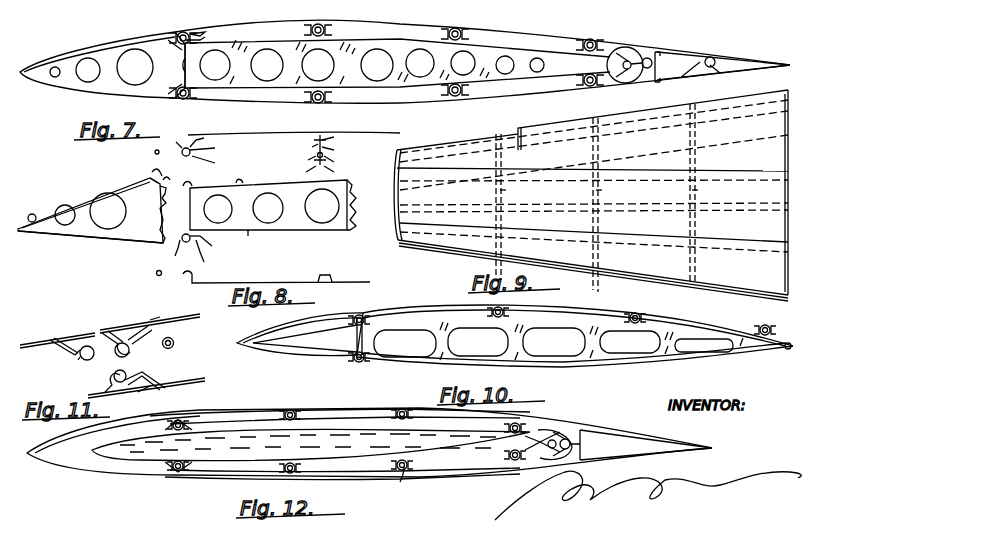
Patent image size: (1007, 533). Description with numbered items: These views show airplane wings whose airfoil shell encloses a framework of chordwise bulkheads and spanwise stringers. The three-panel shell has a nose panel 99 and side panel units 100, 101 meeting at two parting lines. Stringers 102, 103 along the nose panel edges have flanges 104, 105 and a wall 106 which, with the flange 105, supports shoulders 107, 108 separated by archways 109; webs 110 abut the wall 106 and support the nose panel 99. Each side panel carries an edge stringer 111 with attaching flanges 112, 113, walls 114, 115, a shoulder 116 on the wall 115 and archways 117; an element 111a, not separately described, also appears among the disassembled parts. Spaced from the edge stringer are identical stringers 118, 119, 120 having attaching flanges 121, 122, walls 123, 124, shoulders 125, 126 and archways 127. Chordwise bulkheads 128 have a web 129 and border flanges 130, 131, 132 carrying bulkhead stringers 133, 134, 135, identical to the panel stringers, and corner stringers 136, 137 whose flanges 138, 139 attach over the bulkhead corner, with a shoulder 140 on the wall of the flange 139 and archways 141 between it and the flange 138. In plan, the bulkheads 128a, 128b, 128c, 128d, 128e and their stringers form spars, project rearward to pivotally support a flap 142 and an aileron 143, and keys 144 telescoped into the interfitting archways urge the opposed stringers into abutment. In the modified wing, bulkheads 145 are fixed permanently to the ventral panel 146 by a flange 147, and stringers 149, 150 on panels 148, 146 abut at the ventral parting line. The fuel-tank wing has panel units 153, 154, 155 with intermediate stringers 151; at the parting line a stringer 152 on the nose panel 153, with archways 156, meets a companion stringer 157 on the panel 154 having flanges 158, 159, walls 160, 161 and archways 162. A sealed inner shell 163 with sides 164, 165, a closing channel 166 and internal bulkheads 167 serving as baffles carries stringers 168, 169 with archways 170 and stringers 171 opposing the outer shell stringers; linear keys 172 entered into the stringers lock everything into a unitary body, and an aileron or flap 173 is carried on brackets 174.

In FIG. 7, the nose panel 99 is at (108, 46).
In FIG. 9, the nose panel 99 is at (444, 246).
In FIG. 7, the side panel unit 100 is at (522, 32).
In FIG. 9, the side panel unit 100 is at (570, 146).
In FIG. 7, the side panel unit 101 is at (486, 98).
In FIG. 7, the stringer 102 is at (183, 33).
In FIG. 9, the stringer 102 is at (636, 240).
In FIG. 7, the stringer 103 is at (176, 98).
In FIG. 8, the stringer 103 is at (160, 245).
In FIG. 8, the flange 104 is at (140, 174).
In FIG. 8, the flange 105 is at (156, 170).
In FIG. 8, the wall 106 is at (164, 225).
In FIG. 8, the shoulder 107 is at (164, 176).
In FIG. 8, the shoulder 108 is at (175, 205).
In FIG. 8, the archways 109 is at (175, 192).
In FIG. 8, the web 110 is at (92, 210).
In FIG. 7, the edge stringer 111 is at (201, 31).
In FIG. 8, the edge stringer 111 is at (294, 146).
In FIG. 9, the edge stringer 111 is at (645, 229).
In FIG. 8, the lower skin panel 111a is at (258, 284).
In FIG. 8, the attaching flange 112 is at (202, 137).
In FIG. 8, the attaching flange 113 is at (212, 140).
In FIG. 8, the wall 114 is at (184, 146).
In FIG. 8, the wall 115 is at (210, 149).
In FIG. 8, the shoulder 116 is at (210, 160).
In FIG. 8, the archways 117 is at (172, 148).
In FIG. 7, the stringer 118 is at (330, 31).
In FIG. 8, the stringer 118 is at (318, 137).
In FIG. 9, the stringer 118 is at (546, 215).
In FIG. 7, the stringer 119 is at (468, 34).
In FIG. 9, the stringer 119 is at (585, 179).
In FIG. 7, the stringer 120 is at (583, 45).
In FIG. 9, the stringer 120 is at (672, 156).
In FIG. 8, the attaching flange 121 is at (312, 146).
In FIG. 8, the attaching flange 122 is at (334, 148).
In FIG. 8, the wall 123 is at (310, 159).
In FIG. 8, the wall 124 is at (326, 136).
In FIG. 8, the shoulder 125 is at (310, 172).
In FIG. 8, the shoulder 126 is at (334, 160).
In FIG. 8, the archways 127 is at (334, 172).
In FIG. 7, the bulkhead 128 is at (378, 27).
In FIG. 8, the bulkhead 128 is at (348, 231).
In FIG. 9, the bulkhead 128a is at (784, 158).
In FIG. 9, the bulkhead 128b is at (696, 198).
In FIG. 9, the bulkhead 128c is at (602, 199).
In FIG. 9, the bulkhead 128d is at (523, 198).
In FIG. 9, the bulkhead 128e is at (408, 200).
In FIG. 8, the web 129 is at (252, 208).
In FIG. 8, the flange 130 is at (242, 178).
In FIG. 8, the flange 131 is at (206, 210).
In FIG. 8, the flange 132 is at (264, 232).
In FIG. 7, the bulkhead stringer 133 is at (304, 33).
In FIG. 8, the bulkhead stringer 133 is at (356, 182).
In FIG. 7, the bulkhead stringer 134 is at (440, 33).
In FIG. 7, the bulkhead stringer 135 is at (608, 46).
In FIG. 7, the bulkhead stringer 136 is at (198, 38).
In FIG. 8, the bulkhead stringer 136 is at (203, 183).
In FIG. 8, the bulkhead stringer 137 is at (205, 250).
In FIG. 8, the flange 138 is at (163, 255).
In FIG. 8, the flange 139 is at (200, 238).
In FIG. 8, the shoulder 140 is at (210, 264).
In FIG. 8, the archways 141 is at (187, 255).
In FIG. 7, the flap 142 is at (675, 52).
In FIG. 9, the flap 142 is at (656, 109).
In FIG. 9, the aileron 143 is at (468, 143).
In FIG. 8, the keys 144 is at (155, 274).
In FIG. 10, the bulkheads 145 is at (455, 343).
In FIG. 10, the ventral panel 146 is at (620, 360).
In FIG. 10, the flange 147 is at (565, 345).
In FIG. 10, the panel 148 is at (283, 358).
In FIG. 10, the stringer 149 is at (352, 355).
In FIG. 10, the stringer 150 is at (364, 360).
In FIG. 12, the stringer 151 is at (310, 411).
In FIG. 11, the stringer 152 is at (55, 356).
In FIG. 11, the nose panel 153 is at (50, 336).
In FIG. 12, the nose panel 153 is at (68, 470).
In FIG. 10, the panel unit 154 is at (578, 325).
In FIG. 11, the panel unit 154 is at (142, 316).
In FIG. 12, the panel unit 154 is at (254, 411).
In FIG. 12, the panel unit 155 is at (480, 474).
In FIG. 11, the archways 156 is at (85, 361).
In FIG. 11, the companion stringer 157 is at (130, 352).
In FIG. 11, the flange 158 is at (104, 336).
In FIG. 11, the flange 159 is at (147, 316).
In FIG. 11, the wall 160 is at (102, 336).
In FIG. 11, the wall 161 is at (153, 328).
In FIG. 11, the archways 162 is at (150, 374).
In FIG. 11, the inner shell 163 is at (198, 378).
In FIG. 12, the inner shell 163 is at (120, 470).
In FIG. 12, the side 164 is at (348, 422).
In FIG. 12, the side 165 is at (357, 470).
In FIG. 12, the channel 166 is at (503, 452).
In FIG. 12, the bulkheads 167 is at (248, 470).
In FIG. 11, the stringer 168 is at (140, 390).
In FIG. 12, the stringer 168 is at (188, 420).
In FIG. 12, the stringer 169 is at (190, 472).
In FIG. 11, the archways 170 is at (108, 386).
In FIG. 12, the stringer 171 is at (278, 418).
In FIG. 11, the linear keys 172 is at (175, 343).
In FIG. 12, the linear keys 172 is at (402, 481).
In FIG. 12, the aileron or flap 173 is at (604, 432).
In FIG. 12, the brackets 174 is at (553, 432).